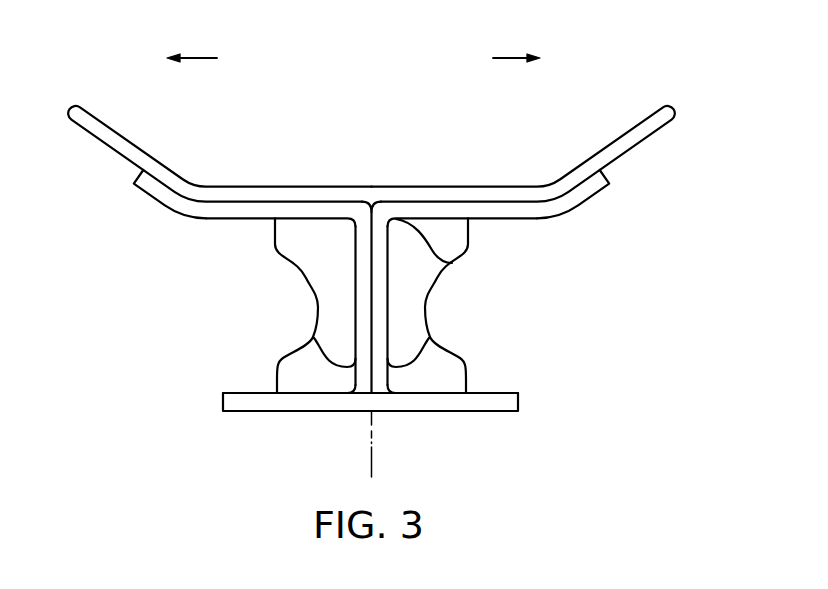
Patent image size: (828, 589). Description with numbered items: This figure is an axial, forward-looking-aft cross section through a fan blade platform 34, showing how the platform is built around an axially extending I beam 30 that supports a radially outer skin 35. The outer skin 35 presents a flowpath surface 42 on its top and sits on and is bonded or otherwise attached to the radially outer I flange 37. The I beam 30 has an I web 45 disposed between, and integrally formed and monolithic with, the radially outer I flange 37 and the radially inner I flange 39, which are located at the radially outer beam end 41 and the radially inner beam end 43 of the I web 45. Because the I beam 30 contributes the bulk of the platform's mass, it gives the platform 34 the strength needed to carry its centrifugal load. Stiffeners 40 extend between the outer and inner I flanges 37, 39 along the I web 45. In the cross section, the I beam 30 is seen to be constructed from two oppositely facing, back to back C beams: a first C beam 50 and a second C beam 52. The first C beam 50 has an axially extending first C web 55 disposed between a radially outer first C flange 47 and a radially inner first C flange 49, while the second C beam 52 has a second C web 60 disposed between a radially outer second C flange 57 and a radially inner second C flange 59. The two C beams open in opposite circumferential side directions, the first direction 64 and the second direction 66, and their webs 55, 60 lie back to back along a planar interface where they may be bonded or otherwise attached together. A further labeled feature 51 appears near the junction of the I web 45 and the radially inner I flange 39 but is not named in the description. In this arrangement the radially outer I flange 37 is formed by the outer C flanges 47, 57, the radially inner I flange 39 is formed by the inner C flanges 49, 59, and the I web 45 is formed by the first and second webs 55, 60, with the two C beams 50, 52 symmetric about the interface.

The I beam 30 is at (247, 444).
The platform 34 is at (557, 381).
The radially outer skin 35 is at (503, 184).
The radially outer I flange 37 is at (412, 210).
The radially inner I flange 39 is at (482, 412).
The stiffeners 40 is at (318, 305).
The radially outer beam end 41 is at (452, 263).
The flowpath surface 42 is at (185, 182).
The radially inner beam end 43 is at (387, 405).
The I web 45 is at (372, 207).
The radially outer first C flange 47 is at (520, 221).
The radially inner first C flange 49 is at (498, 392).
The first C beam 50 is at (362, 222).
The base radius filler 51 is at (365, 405).
The second C beam 52 is at (360, 207).
The first C web 55 is at (430, 334).
The radially outer second C flange 57 is at (178, 220).
The radially inner second C flange 59 is at (230, 392).
The second C web 60 is at (313, 334).
The first circumferential direction 64 is at (507, 57).
The second circumferential direction 66 is at (197, 57).